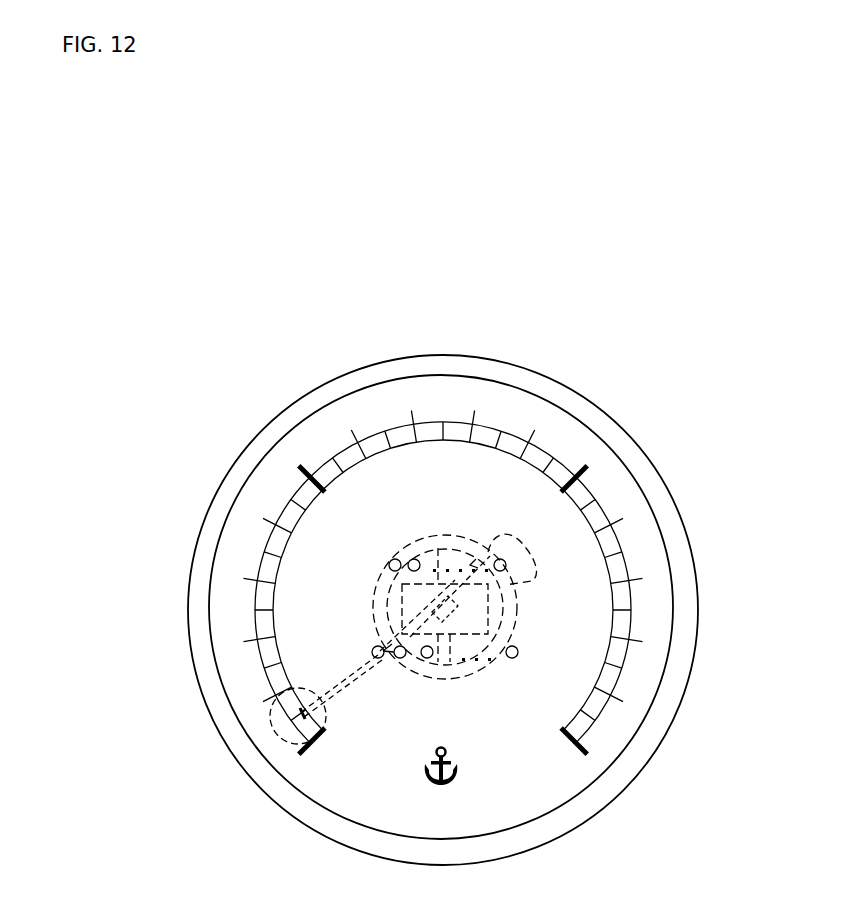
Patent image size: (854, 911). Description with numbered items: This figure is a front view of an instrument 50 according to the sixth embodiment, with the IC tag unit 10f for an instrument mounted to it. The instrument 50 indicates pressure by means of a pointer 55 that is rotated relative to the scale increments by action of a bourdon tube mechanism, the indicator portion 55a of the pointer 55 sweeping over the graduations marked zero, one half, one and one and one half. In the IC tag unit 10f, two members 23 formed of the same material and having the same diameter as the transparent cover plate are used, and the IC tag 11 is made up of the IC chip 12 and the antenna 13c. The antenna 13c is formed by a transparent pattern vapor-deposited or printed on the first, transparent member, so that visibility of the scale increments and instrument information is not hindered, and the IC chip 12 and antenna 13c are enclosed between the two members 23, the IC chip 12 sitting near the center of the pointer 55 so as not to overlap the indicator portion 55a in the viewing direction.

The IC tag 11 is at (330, 300).
The antenna 13c is at (373, 590).
The IC chip 12 is at (438, 548).
The IC tag unit for an instrument 10f is at (523, 477).
The members 23 is at (290, 578).
The pointer 55 is at (375, 650).
The indicator portion 55a is at (272, 727).
The instrument 50 is at (197, 685).